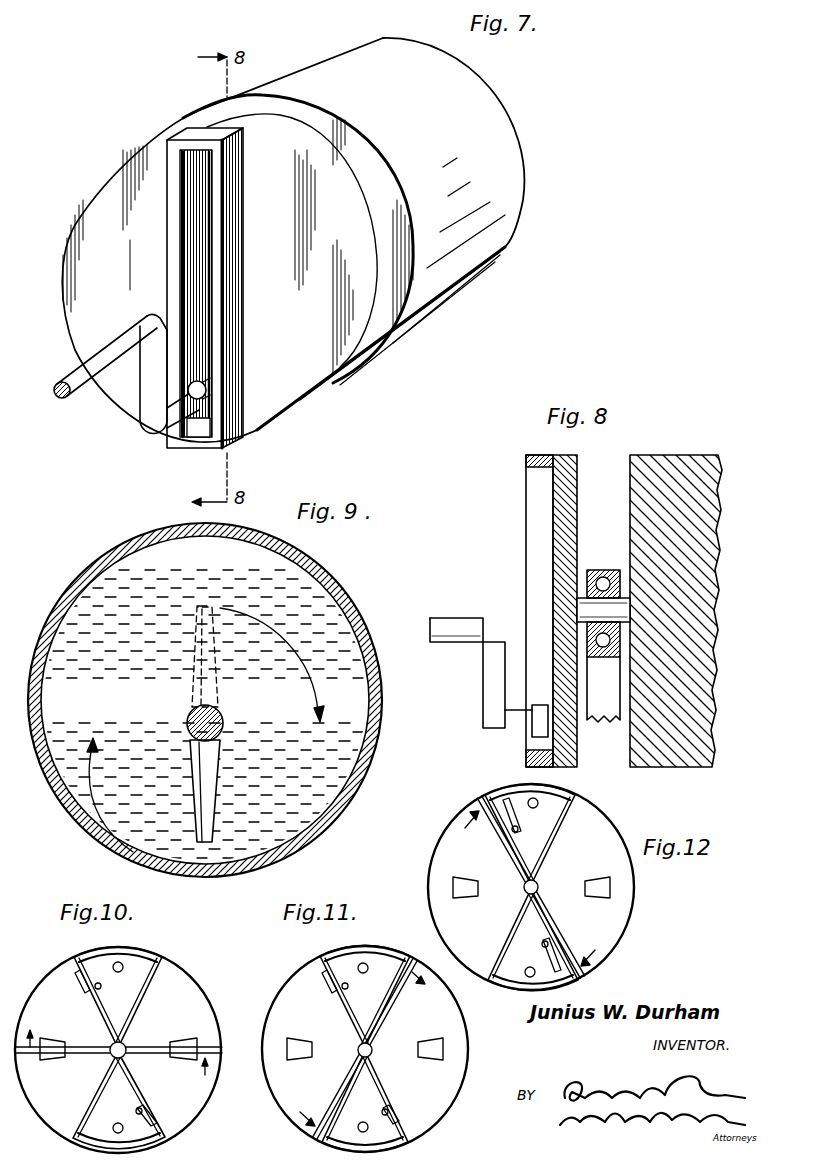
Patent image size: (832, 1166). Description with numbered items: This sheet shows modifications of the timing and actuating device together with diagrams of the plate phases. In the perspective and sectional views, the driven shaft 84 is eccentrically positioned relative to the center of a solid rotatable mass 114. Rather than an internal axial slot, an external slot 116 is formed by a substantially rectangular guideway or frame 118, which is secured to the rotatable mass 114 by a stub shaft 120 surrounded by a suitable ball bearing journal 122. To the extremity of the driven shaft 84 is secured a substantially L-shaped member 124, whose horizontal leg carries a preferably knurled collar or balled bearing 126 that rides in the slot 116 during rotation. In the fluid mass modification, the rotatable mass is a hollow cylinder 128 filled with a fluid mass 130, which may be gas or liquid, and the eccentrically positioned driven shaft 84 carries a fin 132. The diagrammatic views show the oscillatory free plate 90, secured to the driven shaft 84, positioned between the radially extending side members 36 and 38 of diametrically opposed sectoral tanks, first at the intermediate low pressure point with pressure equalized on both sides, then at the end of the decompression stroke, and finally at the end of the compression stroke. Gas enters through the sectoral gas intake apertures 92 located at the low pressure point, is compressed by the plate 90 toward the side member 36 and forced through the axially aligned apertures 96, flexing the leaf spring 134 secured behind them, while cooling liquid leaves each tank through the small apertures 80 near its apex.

In FIG. 7, the rotatable mass 114 is at (518, 178).
In FIG. 8, the rotatable mass 114 is at (688, 460).
In FIG. 7, the external slot 116 is at (208, 213).
In FIG. 8, the external slot 116 is at (537, 512).
In FIG. 7, the guideway or frame 118 is at (237, 300).
In FIG. 8, the guideway or frame 118 is at (578, 463).
In FIG. 8, the stub shaft 120 is at (628, 600).
In FIG. 8, the ball bearing journal 122 is at (600, 570).
In FIG. 7, the L-shaped member 124 is at (147, 425).
In FIG. 8, the L-shaped member 124 is at (487, 690).
In FIG. 7, the collar 126 is at (213, 393).
In FIG. 8, the collar 126 is at (552, 725).
In FIG. 7, the driven shaft 84 is at (94, 404).
In FIG. 9, the driven shaft 84 is at (223, 725).
In FIG. 10, the driven shaft 84 is at (125, 1056).
In FIG. 11, the driven shaft 84 is at (372, 1056).
In FIG. 12, the driven shaft 84 is at (538, 882).
In FIG. 9, the hollow cylinder 128 is at (333, 583).
In FIG. 9, the fluid mass 130 is at (342, 643).
In FIG. 9, the fin 132 is at (208, 795).
In FIG. 10, the side member 36 is at (95, 1003).
In FIG. 11, the side member 36 is at (328, 972).
In FIG. 12, the side member 36 is at (482, 790).
In FIG. 10, the side member 38 is at (148, 984).
In FIG. 11, the side member 38 is at (405, 955).
In FIG. 12, the side member 38 is at (567, 815).
In FIG. 10, the apertures 80 is at (97, 1102).
In FIG. 11, the apertures 80 is at (347, 1097).
In FIG. 12, the apertures 80 is at (507, 947).
In FIG. 10, the oscillatory free plate 90 is at (140, 1046).
In FIG. 11, the oscillatory free plate 90 is at (398, 1002).
In FIG. 12, the oscillatory free plate 90 is at (548, 907).
In FIG. 10, the gas intake apertures 92 is at (180, 1040).
In FIG. 11, the gas intake apertures 92 is at (295, 1040).
In FIG. 12, the gas intake apertures 92 is at (590, 878).
In FIG. 10, the apertures 96 is at (85, 973).
In FIG. 11, the apertures 96 is at (330, 984).
In FIG. 12, the apertures 96 is at (495, 822).
In FIG. 10, the leaf spring 134 is at (100, 967).
In FIG. 11, the leaf spring 134 is at (358, 947).
In FIG. 12, the leaf spring 134 is at (511, 820).